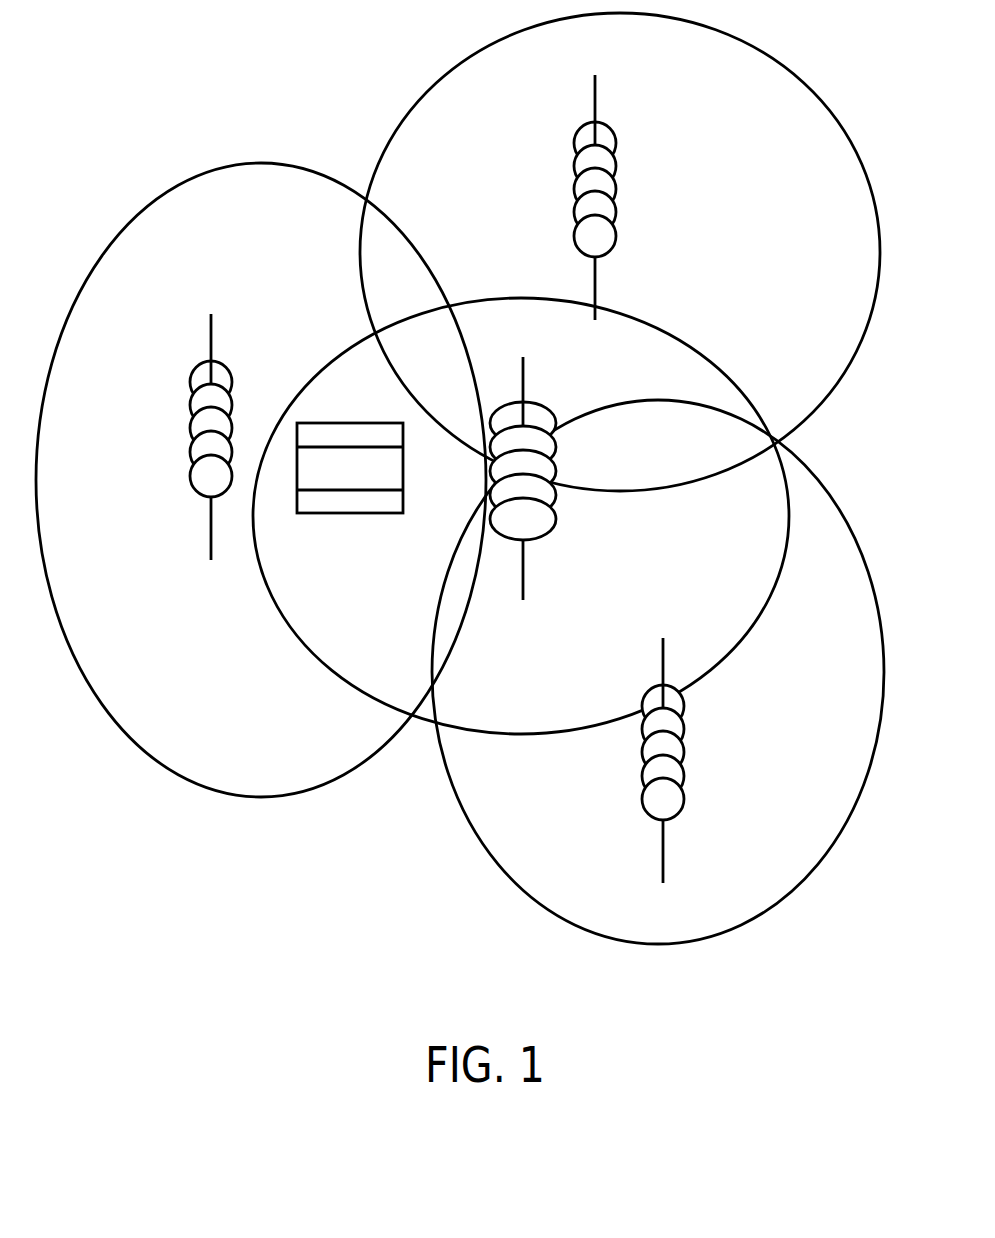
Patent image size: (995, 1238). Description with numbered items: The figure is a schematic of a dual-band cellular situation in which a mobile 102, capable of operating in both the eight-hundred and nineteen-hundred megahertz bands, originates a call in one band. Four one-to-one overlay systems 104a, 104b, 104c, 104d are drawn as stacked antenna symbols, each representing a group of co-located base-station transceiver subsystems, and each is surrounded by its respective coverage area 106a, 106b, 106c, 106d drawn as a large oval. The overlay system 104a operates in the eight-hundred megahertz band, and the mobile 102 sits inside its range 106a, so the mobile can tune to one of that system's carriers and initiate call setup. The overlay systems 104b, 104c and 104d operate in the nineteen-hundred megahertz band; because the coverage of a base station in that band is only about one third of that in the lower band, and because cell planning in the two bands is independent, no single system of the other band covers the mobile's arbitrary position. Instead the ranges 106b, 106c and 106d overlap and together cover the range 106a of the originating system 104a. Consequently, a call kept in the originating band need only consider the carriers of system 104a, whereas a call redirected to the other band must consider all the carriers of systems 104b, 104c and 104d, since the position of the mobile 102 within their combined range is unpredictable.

The mobile 102 is at (378, 513).
The 1-1 overlay system 104a is at (525, 590).
The 1-1 overlay system 104b is at (665, 865).
The 1-1 overlay system 104c is at (597, 298).
The 1-1 overlay system 104d is at (209, 560).
The coverage area 106a is at (787, 535).
The coverage area 106b is at (883, 700).
The coverage area 106c is at (877, 255).
The coverage area 106d is at (143, 752).